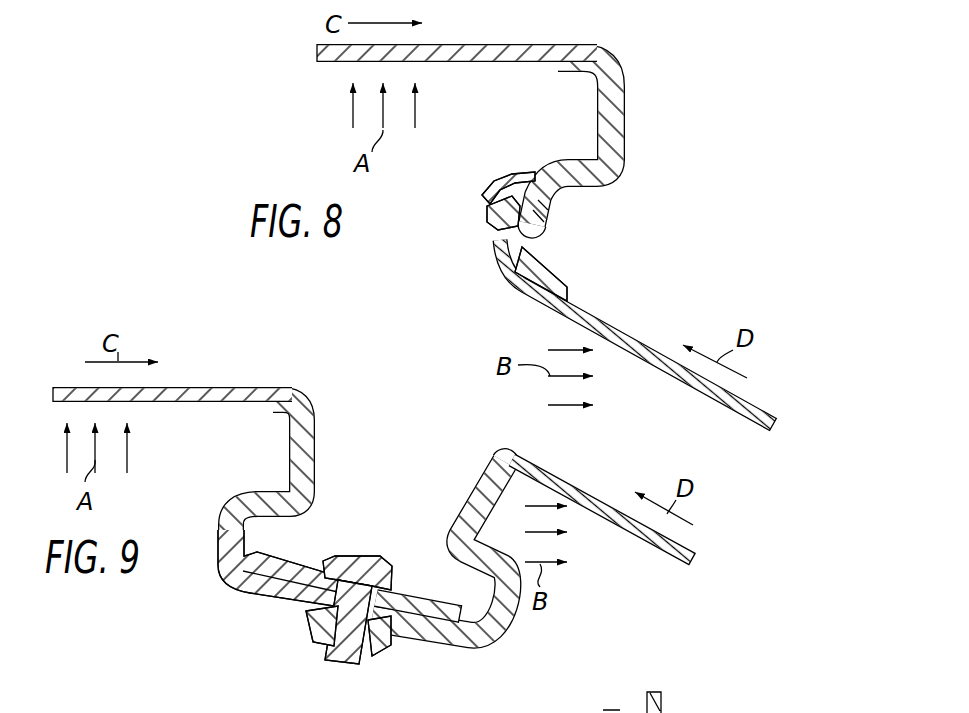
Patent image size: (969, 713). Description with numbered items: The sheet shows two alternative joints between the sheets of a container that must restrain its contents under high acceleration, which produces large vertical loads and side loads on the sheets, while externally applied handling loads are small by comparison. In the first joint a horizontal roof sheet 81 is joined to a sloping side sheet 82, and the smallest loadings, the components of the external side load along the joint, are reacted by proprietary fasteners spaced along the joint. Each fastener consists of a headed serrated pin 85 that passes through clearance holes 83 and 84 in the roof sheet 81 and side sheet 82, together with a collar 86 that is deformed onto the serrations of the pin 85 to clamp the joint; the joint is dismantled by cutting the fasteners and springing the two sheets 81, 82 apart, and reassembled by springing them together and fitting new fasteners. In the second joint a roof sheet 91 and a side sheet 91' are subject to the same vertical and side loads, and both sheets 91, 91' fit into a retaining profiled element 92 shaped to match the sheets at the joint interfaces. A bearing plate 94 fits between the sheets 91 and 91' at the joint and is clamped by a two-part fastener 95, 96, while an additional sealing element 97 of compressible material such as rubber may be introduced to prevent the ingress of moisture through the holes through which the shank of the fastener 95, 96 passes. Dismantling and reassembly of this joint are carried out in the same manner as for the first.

In FIG. 8, the horizontal roof sheet 81 is at (543, 49).
In FIG. 8, the sloping side sheet 82 is at (612, 326).
In FIG. 8, the clearance hole 83 is at (537, 236).
In FIG. 8, the clearance hole 84 is at (497, 228).
In FIG. 8, the headed serrated pin 85 is at (548, 205).
In FIG. 8, the collar 86 is at (482, 208).
In FIG. 9, the roof sheet 91 is at (285, 488).
In FIG. 9, the side sheet 91' is at (603, 511).
In FIG. 9, the retaining profiled element 92 is at (218, 527).
In FIG. 9, the bearing plate 94 is at (420, 590).
In FIG. 9, the fastener part 95 is at (358, 556).
In FIG. 9, the fastener part 96 is at (305, 632).
In FIG. 9, the sealing element 97 is at (407, 637).